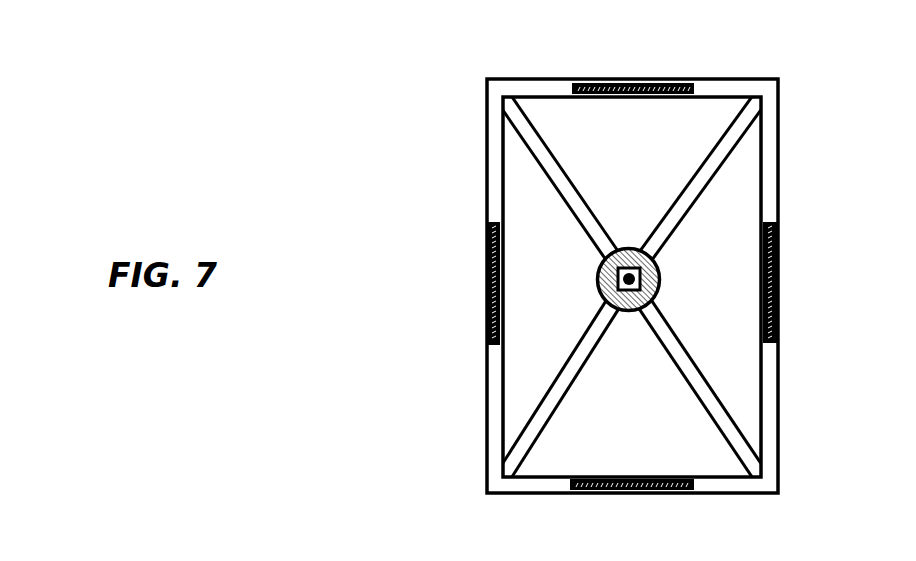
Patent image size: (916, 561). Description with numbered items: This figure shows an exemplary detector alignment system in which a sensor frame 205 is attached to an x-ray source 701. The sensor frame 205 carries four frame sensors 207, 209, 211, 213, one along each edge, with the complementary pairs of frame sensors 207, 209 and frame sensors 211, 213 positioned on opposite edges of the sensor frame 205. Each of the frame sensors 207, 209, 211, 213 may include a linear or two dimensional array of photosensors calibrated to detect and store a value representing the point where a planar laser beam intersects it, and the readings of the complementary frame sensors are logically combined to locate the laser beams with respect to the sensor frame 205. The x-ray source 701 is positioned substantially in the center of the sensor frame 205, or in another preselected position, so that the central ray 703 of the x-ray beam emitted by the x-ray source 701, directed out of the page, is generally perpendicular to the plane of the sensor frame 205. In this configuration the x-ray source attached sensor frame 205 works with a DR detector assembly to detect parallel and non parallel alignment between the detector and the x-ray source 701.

The sensor frame 205 is at (778, 117).
The frame sensor 207 is at (678, 80).
The frame sensor 209 is at (645, 492).
The frame sensor 211 is at (485, 260).
The frame sensor 213 is at (780, 248).
The x-ray source 701 is at (660, 290).
The central ray 703 is at (630, 276).